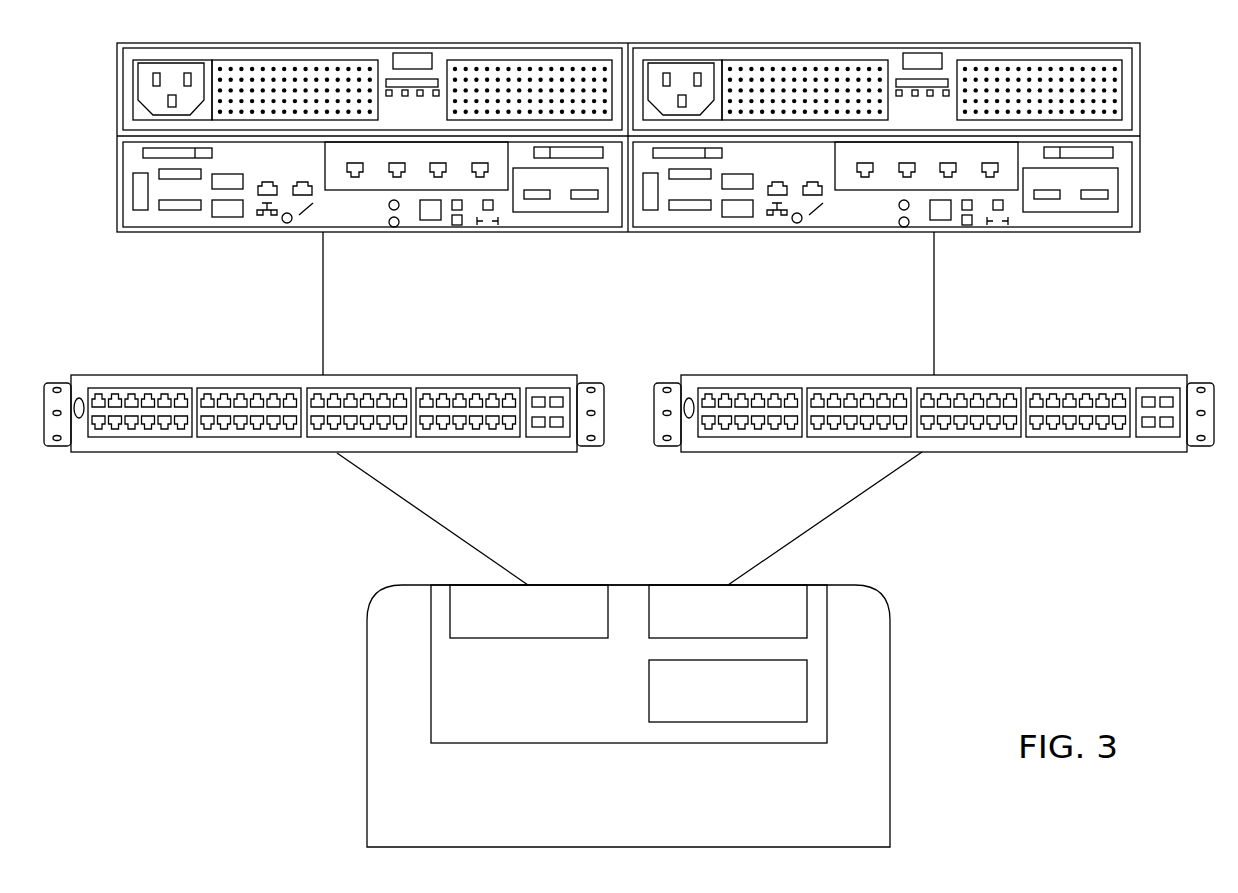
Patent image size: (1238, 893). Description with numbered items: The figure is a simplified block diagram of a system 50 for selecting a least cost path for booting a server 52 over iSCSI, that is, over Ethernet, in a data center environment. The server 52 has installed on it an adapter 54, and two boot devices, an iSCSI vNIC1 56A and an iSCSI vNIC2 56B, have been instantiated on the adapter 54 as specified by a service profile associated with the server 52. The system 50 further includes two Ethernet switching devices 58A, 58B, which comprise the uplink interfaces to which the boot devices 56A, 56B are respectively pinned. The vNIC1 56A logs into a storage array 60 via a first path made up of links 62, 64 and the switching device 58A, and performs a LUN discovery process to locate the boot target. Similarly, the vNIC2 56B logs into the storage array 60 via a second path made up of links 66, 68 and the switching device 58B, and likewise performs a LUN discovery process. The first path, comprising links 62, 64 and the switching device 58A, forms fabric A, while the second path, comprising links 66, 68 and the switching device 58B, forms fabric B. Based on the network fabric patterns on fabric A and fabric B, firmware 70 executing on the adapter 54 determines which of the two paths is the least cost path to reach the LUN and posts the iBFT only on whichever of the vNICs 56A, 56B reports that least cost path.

The system 50 is at (172, 686).
The server 52 is at (642, 824).
The adapter 54 is at (543, 724).
The iSCSI vNIC1 56A is at (567, 593).
The iSCSI vNIC2 56B is at (691, 592).
The Ethernet switching device 58A is at (279, 453).
The Ethernet switching device 58B is at (989, 453).
The storage array 60 is at (117, 82).
The link 62 is at (432, 519).
The link 64 is at (323, 303).
The link 66 is at (825, 518).
The link 68 is at (934, 303).
The firmware 70 is at (649, 688).